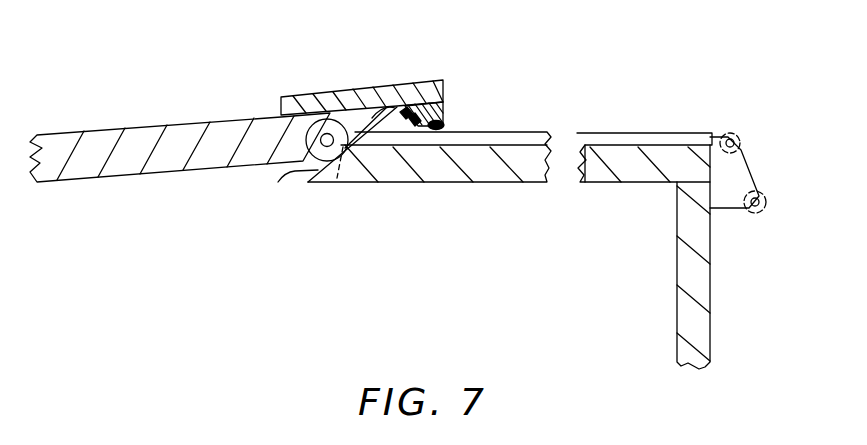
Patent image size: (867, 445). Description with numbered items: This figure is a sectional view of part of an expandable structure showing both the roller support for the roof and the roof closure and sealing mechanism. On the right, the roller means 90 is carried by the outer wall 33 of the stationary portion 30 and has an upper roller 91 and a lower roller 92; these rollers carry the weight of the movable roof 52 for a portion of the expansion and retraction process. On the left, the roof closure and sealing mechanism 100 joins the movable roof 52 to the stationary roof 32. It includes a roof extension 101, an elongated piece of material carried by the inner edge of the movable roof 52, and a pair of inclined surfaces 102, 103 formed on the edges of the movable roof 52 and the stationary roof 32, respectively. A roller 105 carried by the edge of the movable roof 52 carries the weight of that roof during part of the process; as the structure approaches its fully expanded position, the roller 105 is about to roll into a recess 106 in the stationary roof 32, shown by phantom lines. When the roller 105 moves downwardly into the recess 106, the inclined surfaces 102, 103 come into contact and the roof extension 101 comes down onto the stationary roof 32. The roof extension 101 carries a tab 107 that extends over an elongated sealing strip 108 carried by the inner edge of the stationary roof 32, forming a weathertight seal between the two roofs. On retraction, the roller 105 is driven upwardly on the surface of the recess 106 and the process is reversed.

The stationary portion 30 is at (702, 216).
The stationary roof 32 is at (439, 135).
The outer wall 33 is at (722, 257).
The movable roof 52 is at (180, 133).
The roller means 90 is at (768, 173).
The upper roller 91 is at (761, 126).
The lower roller 92 is at (785, 219).
The roof closure and sealing mechanism 100 is at (393, 74).
The roof extension 101 is at (356, 82).
The inclined surface 102 is at (439, 91).
The inclined surface 103 is at (263, 187).
The roller 105 is at (278, 125).
The recess 106 is at (357, 167).
The tab 107 is at (459, 108).
The elongated sealing strip 108 is at (440, 175).